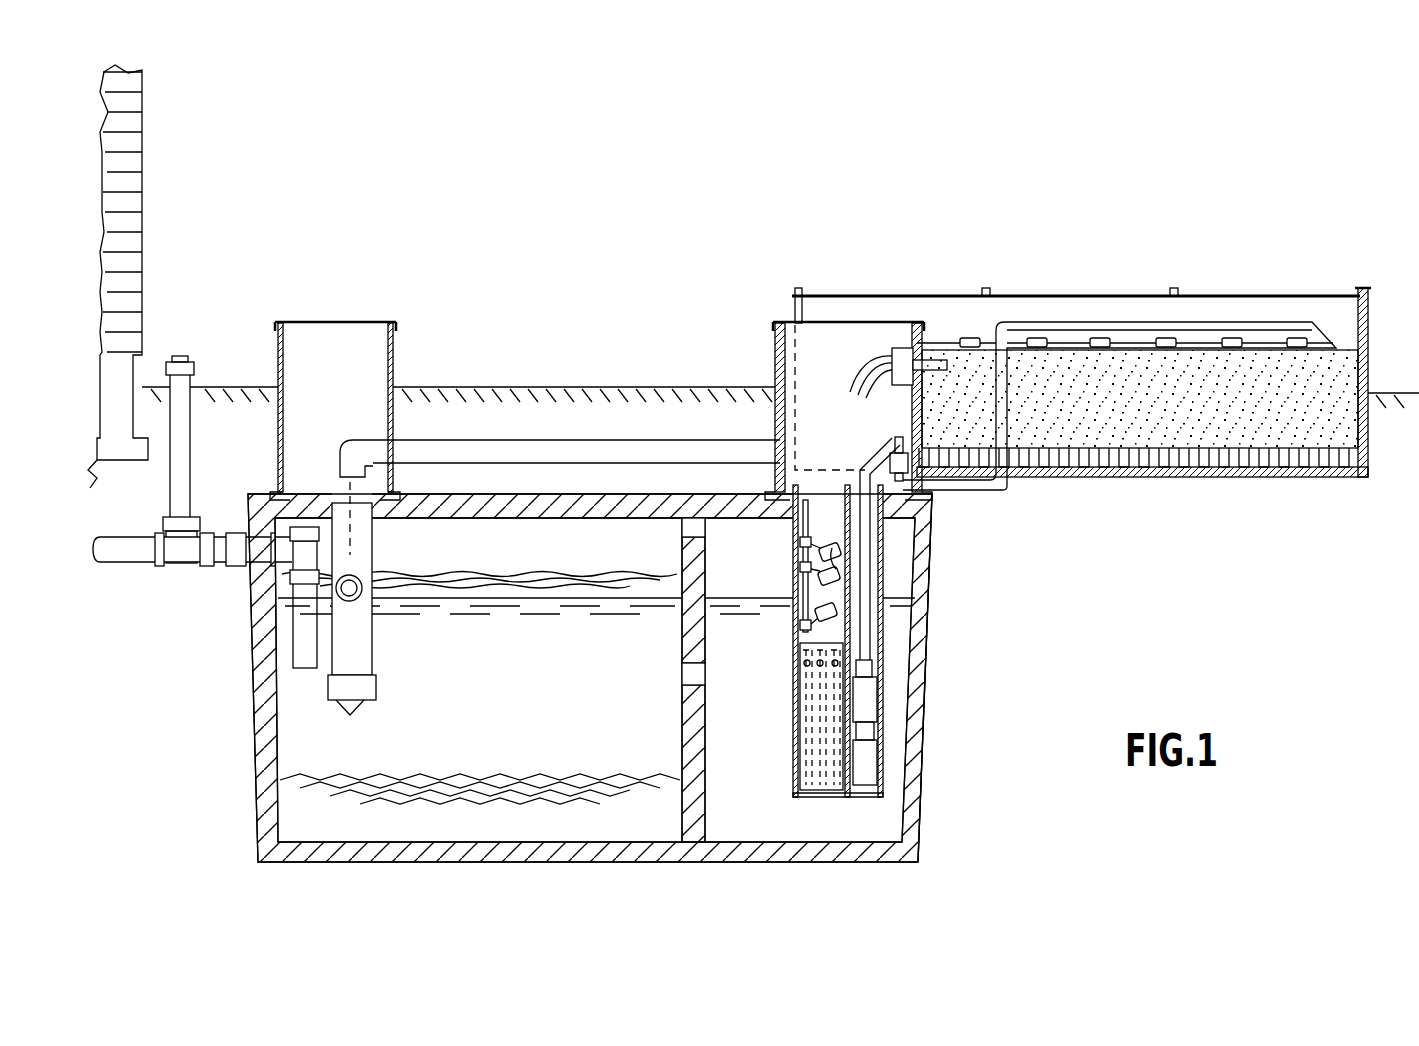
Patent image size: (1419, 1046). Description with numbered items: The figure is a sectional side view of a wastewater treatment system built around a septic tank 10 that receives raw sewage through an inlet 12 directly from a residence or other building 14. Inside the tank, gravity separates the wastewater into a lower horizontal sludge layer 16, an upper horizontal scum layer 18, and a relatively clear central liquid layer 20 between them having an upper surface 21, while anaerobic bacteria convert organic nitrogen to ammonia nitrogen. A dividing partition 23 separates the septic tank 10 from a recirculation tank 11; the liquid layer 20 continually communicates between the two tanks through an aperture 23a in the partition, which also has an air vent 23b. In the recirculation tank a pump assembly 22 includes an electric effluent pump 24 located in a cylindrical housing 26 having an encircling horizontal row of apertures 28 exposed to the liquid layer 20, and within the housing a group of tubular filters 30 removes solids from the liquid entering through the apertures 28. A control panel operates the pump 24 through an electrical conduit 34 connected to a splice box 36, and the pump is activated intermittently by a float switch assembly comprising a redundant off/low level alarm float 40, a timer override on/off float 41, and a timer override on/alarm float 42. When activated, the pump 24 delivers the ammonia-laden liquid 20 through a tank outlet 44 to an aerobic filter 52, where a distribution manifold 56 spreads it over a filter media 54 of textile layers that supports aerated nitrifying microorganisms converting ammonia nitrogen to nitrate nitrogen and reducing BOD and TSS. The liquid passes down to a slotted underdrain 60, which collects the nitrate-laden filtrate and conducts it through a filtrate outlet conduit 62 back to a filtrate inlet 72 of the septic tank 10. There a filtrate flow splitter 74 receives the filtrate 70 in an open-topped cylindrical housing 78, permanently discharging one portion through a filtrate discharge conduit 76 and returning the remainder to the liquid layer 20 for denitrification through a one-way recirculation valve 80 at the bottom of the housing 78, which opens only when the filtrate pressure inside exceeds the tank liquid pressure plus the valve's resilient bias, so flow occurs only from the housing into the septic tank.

The septic tank 10 is at (278, 752).
The recirculation tank 11 is at (903, 822).
The inlet 12 is at (140, 565).
The building 14 is at (142, 270).
The sludge layer 16 is at (540, 776).
The scum layer 18 is at (535, 575).
The liquid layer 20 is at (500, 669).
The upper surface 21 is at (620, 595).
The pump assembly 22 is at (758, 374).
The dividing partition 23 is at (683, 715).
The aperture 23a is at (683, 672).
The air vent 23b is at (690, 530).
The electric effluent pump 24 is at (872, 700).
The cylindrical housing 26 is at (800, 760).
The apertures 28 is at (806, 663).
The tubular filters 30 is at (820, 797).
The electrical conduit 34 is at (928, 365).
The splice box 36 is at (896, 385).
The redundant off/low level alarm float 40 is at (840, 612).
The timer override on/off float 41 is at (805, 590).
The timer override on/alarm float 42 is at (830, 545).
The tank outlet 44 is at (1283, 322).
The aerobic filter 52 is at (1126, 285).
The filter media 54 is at (1073, 360).
The distribution manifold 56 is at (1257, 338).
The slotted underdrain 60 is at (1225, 470).
The filtrate outlet conduit 62 is at (605, 441).
The filtrate 70 is at (365, 540).
The filtrate inlet 72 is at (350, 440).
The filtrate flow splitter 74 is at (385, 672).
The filtrate discharge conduit 76 is at (352, 601).
The cylindrical housing 78 is at (318, 505).
The one-way recirculation valve 80 is at (358, 710).